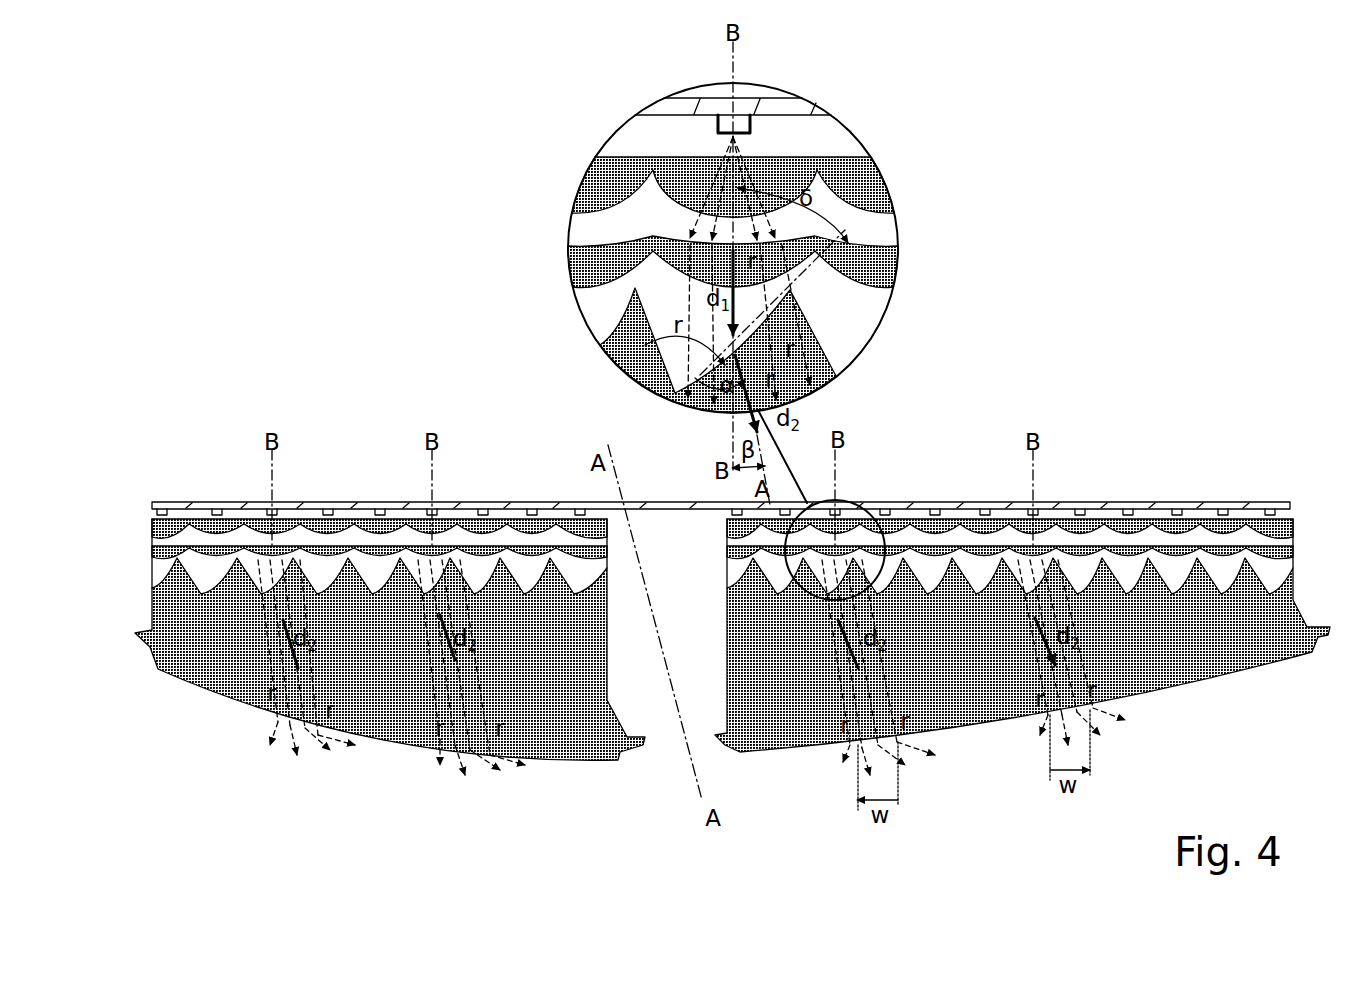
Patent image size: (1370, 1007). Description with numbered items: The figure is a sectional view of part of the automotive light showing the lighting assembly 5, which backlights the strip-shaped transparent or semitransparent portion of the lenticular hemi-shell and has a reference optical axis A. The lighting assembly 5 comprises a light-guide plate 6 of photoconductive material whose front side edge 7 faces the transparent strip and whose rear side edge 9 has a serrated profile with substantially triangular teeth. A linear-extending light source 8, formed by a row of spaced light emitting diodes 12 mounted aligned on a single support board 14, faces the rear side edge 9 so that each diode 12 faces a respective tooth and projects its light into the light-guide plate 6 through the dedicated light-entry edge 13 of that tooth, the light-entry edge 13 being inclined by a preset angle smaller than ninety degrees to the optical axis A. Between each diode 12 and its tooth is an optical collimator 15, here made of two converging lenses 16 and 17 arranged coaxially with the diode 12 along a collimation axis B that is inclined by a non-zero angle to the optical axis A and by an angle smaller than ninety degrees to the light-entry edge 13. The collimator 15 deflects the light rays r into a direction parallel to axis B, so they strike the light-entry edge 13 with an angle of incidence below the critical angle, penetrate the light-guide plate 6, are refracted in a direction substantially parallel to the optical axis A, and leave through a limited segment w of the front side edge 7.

The lighting assembly 5 is at (456, 405).
The light-guide plate 6 is at (190, 648).
The front side edge 7 is at (238, 712).
The linear-extending light source 8 is at (378, 500).
The rear side edge 9 is at (353, 562).
The light emitting diode 12 is at (157, 512).
The light-entry edge 13 is at (222, 578).
The support board 14 is at (185, 501).
The optical collimator 15 is at (252, 517).
The converging lens 16 is at (858, 178).
The converging lens 17 is at (603, 274).